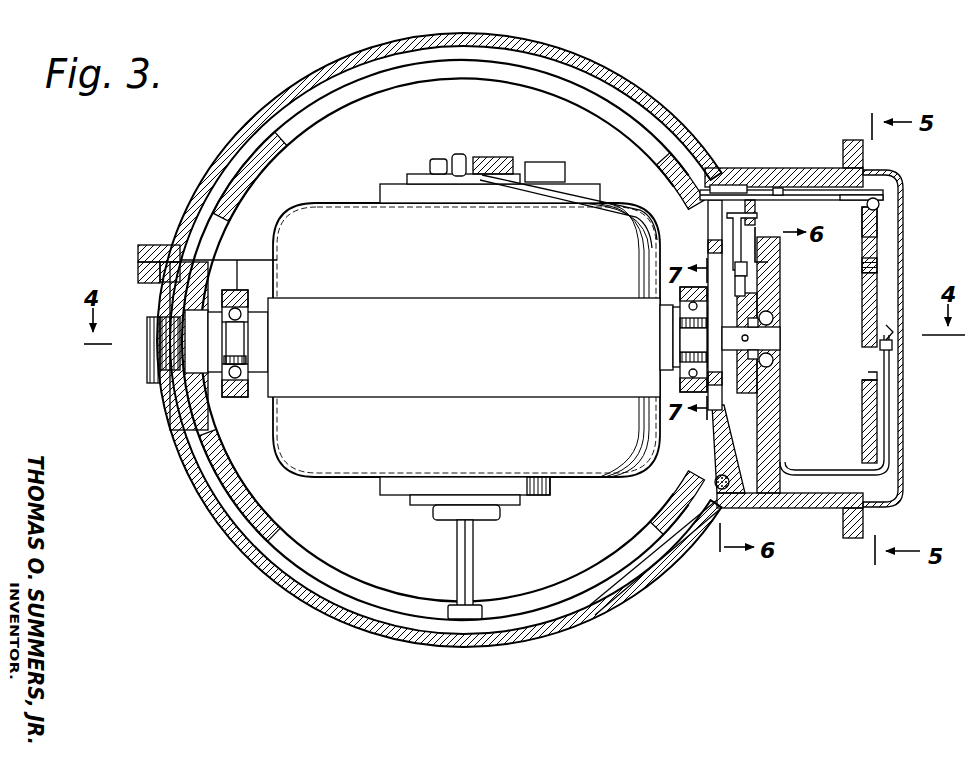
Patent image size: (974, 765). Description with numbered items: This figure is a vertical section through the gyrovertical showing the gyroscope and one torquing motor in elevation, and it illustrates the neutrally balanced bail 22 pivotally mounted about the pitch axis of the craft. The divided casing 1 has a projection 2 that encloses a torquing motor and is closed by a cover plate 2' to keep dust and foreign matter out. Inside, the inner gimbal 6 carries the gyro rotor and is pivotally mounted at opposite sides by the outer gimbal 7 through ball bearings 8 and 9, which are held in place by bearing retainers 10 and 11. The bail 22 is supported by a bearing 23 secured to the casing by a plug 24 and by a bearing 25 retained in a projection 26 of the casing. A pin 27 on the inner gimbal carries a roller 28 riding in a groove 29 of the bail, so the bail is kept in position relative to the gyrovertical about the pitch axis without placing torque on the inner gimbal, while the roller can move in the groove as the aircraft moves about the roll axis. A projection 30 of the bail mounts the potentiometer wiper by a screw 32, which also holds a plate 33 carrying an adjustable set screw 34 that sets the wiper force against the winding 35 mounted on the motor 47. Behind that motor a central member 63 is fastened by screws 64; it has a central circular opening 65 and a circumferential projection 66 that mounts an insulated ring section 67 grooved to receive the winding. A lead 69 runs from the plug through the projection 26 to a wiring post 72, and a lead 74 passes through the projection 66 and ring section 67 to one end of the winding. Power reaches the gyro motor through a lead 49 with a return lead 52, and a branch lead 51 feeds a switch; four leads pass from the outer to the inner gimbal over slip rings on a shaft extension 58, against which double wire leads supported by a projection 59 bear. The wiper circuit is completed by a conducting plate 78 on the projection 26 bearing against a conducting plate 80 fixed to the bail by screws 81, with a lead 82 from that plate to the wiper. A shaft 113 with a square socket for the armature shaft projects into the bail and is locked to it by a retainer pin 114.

The divided casing 1 is at (676, 124).
The projection 2 is at (784, 342).
The cover plate 2' is at (905, 338).
The inner gimbal 6 is at (341, 210).
The outer gimbal 7 is at (236, 398).
The ball bearing 8 is at (690, 337).
The ball bearing 9 is at (243, 330).
The bearing retainer 10 is at (690, 322).
The bearing retainer 11 is at (228, 368).
The neutrally balanced bail 22 is at (212, 478).
The bearing 23 is at (196, 330).
The plug 24 is at (152, 360).
The bearing 25 is at (773, 316).
The projection 26 is at (772, 400).
The pin 27 is at (472, 545).
The roller 28 is at (463, 620).
The groove 29 is at (256, 548).
The projection 30 is at (750, 198).
The screw 32 is at (727, 188).
The plate 33 is at (762, 200).
The adjustable set screw 34 is at (779, 190).
The winding 35 is at (885, 198).
The motor 47 is at (852, 245).
The lead 49 is at (529, 198).
The branch lead 51 is at (806, 193).
The return lead 52 is at (588, 187).
The shaft extension 58 is at (700, 350).
The projection 59 is at (700, 362).
The central member 63 is at (878, 405).
The screws 64 is at (877, 266).
The central circular opening 65 is at (870, 380).
The projection 66 is at (878, 222).
The insulated ring section 67 is at (879, 205).
The lead 69 is at (889, 438).
The wiring post 72 is at (892, 345).
The lead 74 is at (893, 332).
The conducting plate 78 is at (772, 365).
The conducting plate 80 is at (746, 294).
The screws 81 is at (748, 264).
The lead 82 is at (746, 222).
The shaft 113 is at (760, 330).
The retainer pin 114 is at (760, 348).